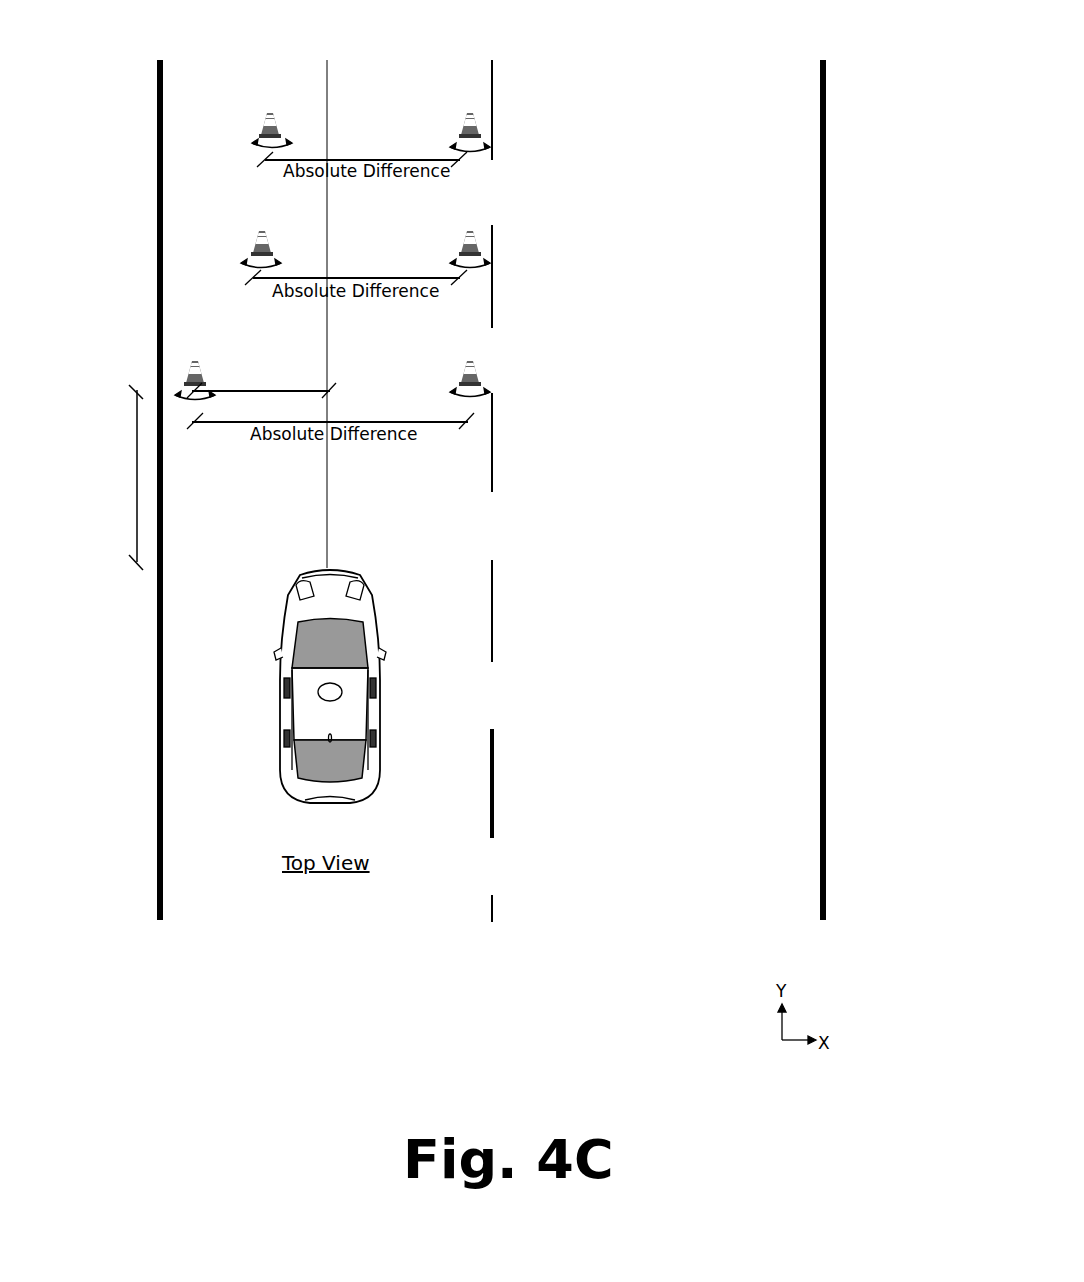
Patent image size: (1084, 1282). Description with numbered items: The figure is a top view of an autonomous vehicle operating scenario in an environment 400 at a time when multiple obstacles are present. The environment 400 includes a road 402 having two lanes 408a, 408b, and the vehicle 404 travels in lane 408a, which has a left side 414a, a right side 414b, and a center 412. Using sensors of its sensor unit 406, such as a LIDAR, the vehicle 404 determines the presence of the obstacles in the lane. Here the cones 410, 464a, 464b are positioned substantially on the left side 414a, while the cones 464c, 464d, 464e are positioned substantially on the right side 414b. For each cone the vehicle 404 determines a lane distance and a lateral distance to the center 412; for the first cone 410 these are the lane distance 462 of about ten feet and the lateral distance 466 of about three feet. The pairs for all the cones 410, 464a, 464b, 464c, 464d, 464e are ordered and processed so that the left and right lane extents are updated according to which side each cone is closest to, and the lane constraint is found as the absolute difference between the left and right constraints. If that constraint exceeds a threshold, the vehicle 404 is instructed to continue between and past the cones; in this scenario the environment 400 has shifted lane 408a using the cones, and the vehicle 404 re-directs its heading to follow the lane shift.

The environment 400 is at (853, 66).
The road 402 is at (826, 281).
The vehicle 404 is at (314, 567).
The sensor unit 406 is at (330, 702).
The lane 408a is at (271, 28).
The lane 408b is at (605, 28).
The cone 410 is at (194, 364).
The center 412 is at (328, 356).
The left side 414a is at (187, 61).
The right side 414b is at (376, 61).
The lane distance 462 is at (133, 426).
The cone 464a is at (266, 199).
The cone 464b is at (275, 82).
The cone 464c is at (474, 82).
The cone 464d is at (474, 200).
The cone 464e is at (474, 331).
The lateral distance 466 is at (316, 392).